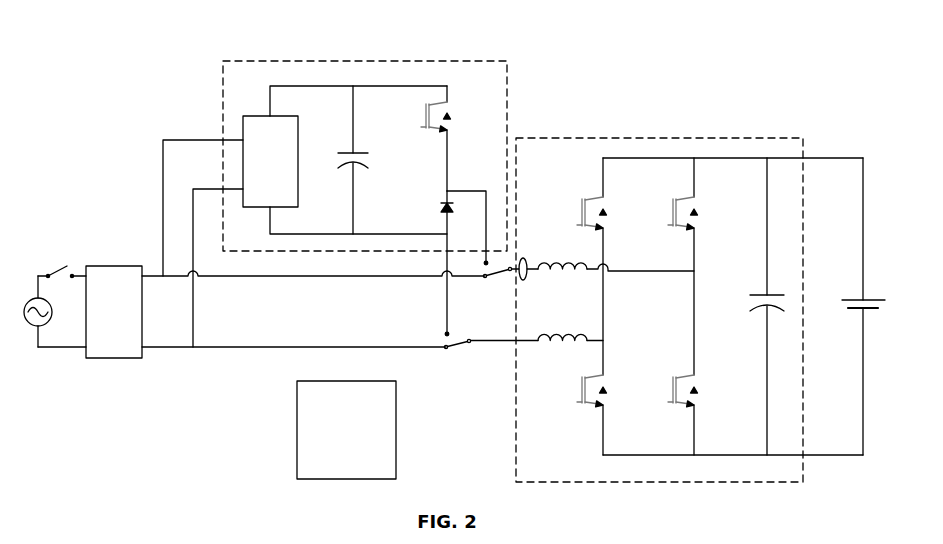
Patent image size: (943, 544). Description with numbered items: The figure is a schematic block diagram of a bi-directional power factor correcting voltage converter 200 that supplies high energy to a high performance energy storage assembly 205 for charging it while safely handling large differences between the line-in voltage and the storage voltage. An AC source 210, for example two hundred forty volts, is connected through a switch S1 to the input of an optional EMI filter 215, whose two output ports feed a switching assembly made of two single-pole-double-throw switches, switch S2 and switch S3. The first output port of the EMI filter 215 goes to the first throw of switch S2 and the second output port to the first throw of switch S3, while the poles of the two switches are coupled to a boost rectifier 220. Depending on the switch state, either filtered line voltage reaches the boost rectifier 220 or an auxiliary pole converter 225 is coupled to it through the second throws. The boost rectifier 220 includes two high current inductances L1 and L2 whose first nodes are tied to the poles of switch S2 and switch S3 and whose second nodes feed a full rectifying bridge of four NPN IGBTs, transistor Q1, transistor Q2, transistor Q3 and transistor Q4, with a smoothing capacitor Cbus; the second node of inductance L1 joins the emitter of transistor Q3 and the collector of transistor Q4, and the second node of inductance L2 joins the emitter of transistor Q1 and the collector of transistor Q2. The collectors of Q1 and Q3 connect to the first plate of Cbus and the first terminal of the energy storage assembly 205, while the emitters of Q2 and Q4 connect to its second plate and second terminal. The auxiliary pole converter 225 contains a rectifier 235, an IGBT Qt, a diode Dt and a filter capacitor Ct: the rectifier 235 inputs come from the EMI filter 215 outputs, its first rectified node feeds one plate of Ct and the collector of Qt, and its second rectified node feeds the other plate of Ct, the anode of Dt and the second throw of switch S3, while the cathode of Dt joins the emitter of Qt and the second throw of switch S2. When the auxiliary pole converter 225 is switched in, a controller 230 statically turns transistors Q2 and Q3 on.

The bi-directional power factor correcting voltage converter 200 is at (632, 45).
The energy storage assembly 205 is at (854, 290).
The AC source 210 is at (52, 330).
The EMI filter 215 is at (114, 312).
The boost rectifier 220 is at (680, 137).
The auxiliary pole converter 225 is at (358, 58).
The controller 230 is at (346, 430).
The rectifier 235 is at (270, 161).
The switch S1 is at (58, 258).
The switch S2 is at (493, 290).
The switch S3 is at (458, 355).
The inductance L1 is at (563, 260).
The inductance L2 is at (563, 320).
The transistor Q1 is at (596, 197).
The transistor Q2 is at (582, 417).
The transistor Q3 is at (683, 197).
The transistor Q4 is at (678, 413).
The transistor Qt is at (422, 138).
The filter capacitor Ct is at (367, 175).
The diode Dt is at (432, 210).
The smoothing capacitor Cbus is at (762, 288).